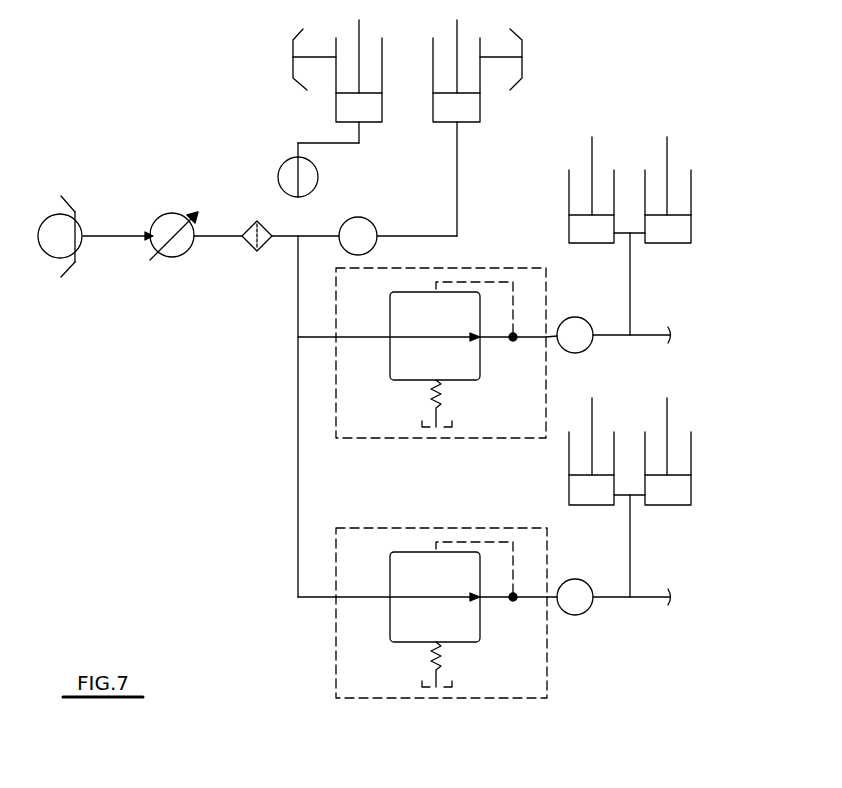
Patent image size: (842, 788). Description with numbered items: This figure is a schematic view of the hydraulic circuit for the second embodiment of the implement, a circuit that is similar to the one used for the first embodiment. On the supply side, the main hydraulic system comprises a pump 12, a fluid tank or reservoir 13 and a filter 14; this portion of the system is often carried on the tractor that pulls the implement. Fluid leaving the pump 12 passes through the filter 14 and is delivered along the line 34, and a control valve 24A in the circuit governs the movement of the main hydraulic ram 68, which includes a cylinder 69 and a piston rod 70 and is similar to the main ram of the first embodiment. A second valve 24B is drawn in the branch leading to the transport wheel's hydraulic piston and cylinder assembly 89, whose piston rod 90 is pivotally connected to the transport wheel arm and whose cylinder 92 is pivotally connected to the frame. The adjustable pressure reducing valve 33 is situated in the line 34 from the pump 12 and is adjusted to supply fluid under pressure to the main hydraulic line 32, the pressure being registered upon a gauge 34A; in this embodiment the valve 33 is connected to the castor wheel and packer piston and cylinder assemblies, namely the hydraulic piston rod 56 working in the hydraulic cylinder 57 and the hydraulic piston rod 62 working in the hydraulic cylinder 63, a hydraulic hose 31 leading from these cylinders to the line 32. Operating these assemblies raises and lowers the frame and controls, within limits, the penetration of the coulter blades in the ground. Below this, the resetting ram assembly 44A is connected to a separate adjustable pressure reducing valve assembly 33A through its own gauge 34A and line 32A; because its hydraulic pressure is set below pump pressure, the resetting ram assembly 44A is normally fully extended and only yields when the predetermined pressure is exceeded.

The pump 12 is at (169, 214).
The fluid tank or reservoir 13 is at (82, 221).
The filter 14 is at (261, 221).
The control valve 24A is at (377, 220).
The valve 24B is at (282, 167).
The hydraulic hose 31 is at (630, 291).
The main hydraulic line 32 is at (613, 331).
The conduit 32A is at (621, 601).
The adjustable pressure reducing valve 33 is at (393, 442).
The adjustable pressure reducing valve assembly 33A is at (336, 645).
The line 34 is at (298, 315).
The gauge 34A is at (585, 347).
The resetting ram assembly 44A is at (650, 517).
The hydraulic piston rod 56 is at (667, 150).
The hydraulic cylinder 57 is at (691, 225).
The hydraulic piston rod 62 is at (592, 170).
The hydraulic cylinder 63 is at (570, 227).
The main hydraulic ram 68 is at (522, 36).
The cylinder 69 is at (480, 115).
The piston rod 70 is at (457, 32).
The hydraulic piston and cylinder assembly 89 is at (283, 57).
The piston rod 90 is at (359, 35).
The cylinder 92 is at (336, 109).